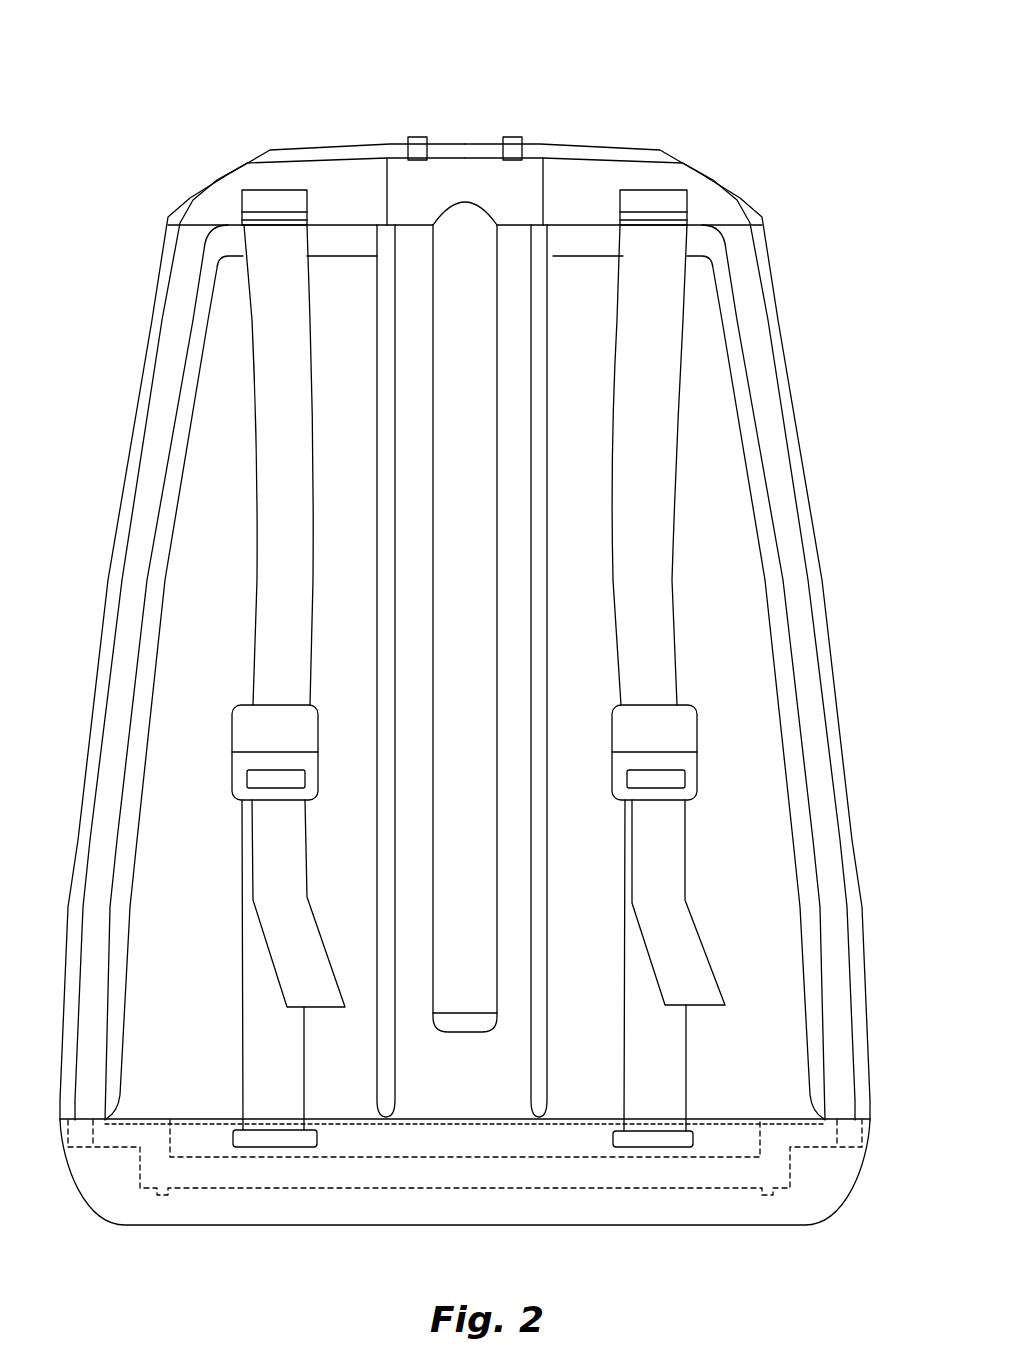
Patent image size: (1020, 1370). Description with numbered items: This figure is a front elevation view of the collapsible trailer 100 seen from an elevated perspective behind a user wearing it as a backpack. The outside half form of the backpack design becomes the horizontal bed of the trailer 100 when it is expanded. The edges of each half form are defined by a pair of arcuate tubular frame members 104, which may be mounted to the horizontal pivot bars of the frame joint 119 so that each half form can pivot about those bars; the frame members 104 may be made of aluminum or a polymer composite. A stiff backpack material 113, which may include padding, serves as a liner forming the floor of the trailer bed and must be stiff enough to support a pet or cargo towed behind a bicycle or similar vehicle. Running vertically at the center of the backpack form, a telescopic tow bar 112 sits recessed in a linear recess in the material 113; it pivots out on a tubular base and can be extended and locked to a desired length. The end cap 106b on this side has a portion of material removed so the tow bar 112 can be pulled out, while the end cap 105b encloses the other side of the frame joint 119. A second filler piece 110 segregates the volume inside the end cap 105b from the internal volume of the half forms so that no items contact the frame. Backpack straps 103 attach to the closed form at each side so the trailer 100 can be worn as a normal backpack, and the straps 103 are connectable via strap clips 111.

The trailer 100 is at (368, 92).
The backpack straps 103 is at (610, 511).
The arcuate tubular frame members 104 is at (130, 580).
The end cap 105b is at (337, 1212).
The end cap 106b is at (558, 193).
The second filler piece 110 is at (403, 1115).
The strap clips 111 is at (650, 703).
The telescopic tow bar 112 is at (456, 388).
The backpack padding material 113 is at (683, 597).
The frame joint 119 is at (590, 1165).